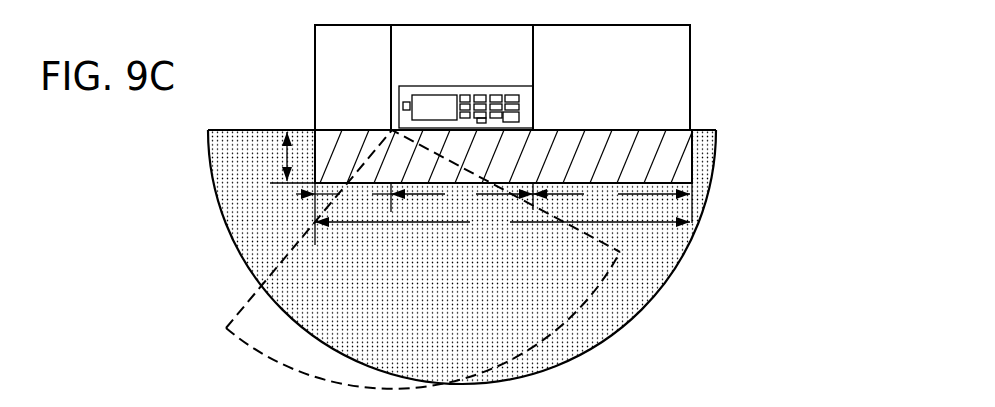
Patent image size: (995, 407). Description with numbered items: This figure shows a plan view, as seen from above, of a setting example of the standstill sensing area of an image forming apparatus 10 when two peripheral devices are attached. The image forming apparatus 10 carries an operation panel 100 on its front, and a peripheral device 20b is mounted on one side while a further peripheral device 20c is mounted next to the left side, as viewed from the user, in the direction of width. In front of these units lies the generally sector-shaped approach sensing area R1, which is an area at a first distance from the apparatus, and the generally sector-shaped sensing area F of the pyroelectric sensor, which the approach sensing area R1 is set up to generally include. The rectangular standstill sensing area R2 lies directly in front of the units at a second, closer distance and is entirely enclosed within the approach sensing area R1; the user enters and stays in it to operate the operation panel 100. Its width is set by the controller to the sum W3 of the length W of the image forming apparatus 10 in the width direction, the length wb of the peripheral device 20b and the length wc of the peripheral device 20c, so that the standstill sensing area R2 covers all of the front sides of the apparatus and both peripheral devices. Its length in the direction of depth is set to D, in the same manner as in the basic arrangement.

The image forming apparatus 10 is at (499, 75).
The operation panel 100 is at (403, 117).
The peripheral device 20b is at (682, 62).
The peripheral device 20c is at (319, 58).
The approach sensing area R1 is at (578, 356).
The standstill sensing area R2 is at (672, 128).
The sensing area F is at (250, 348).
The length in the direction of depth D is at (277, 156).
The length in the direction of width W is at (462, 197).
The length of the peripheral device in the direction of width wc is at (343, 197).
The length of the peripheral device in the direction of width wb is at (611, 197).
The sum of the lengths in the direction of width W3 is at (502, 226).